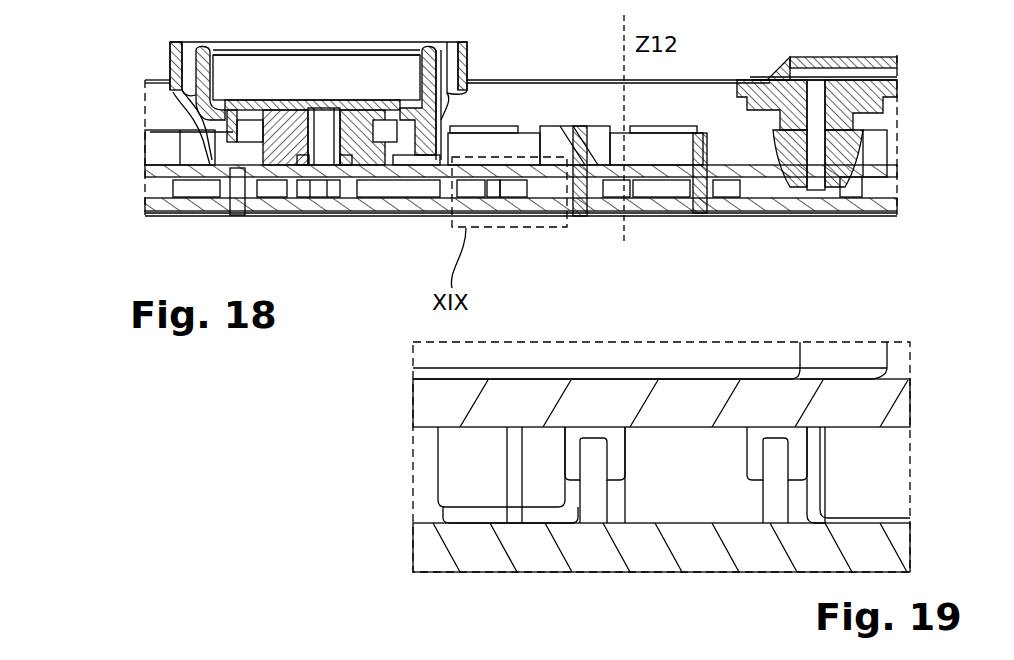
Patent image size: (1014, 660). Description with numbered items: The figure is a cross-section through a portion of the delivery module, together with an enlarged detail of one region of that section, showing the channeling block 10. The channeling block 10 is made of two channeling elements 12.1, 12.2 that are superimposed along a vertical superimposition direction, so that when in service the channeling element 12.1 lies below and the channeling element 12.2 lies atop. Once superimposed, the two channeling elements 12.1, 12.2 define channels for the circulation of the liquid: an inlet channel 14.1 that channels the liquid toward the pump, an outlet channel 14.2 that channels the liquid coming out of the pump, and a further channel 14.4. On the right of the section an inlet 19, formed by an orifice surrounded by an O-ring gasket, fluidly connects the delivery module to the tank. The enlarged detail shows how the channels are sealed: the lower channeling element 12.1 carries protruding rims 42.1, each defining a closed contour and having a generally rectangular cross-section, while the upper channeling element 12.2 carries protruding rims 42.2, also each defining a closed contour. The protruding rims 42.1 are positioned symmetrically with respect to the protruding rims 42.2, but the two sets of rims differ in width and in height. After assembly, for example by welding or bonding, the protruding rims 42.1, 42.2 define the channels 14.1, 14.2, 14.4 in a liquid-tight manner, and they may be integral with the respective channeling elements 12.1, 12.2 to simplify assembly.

In FIG. 18, the channeling block 10 is at (68, 156).
In FIG. 19, the channeling block 10 is at (247, 418).
In FIG. 18, the channeling element 12.1 is at (160, 206).
In FIG. 19, the channeling element 12.1 is at (433, 552).
In FIG. 18, the channeling element 12.2 is at (160, 172).
In FIG. 19, the channeling element 12.2 is at (433, 398).
In FIG. 18, the inlet channel 14.1 is at (838, 197).
In FIG. 18, the outlet channel 14.2 is at (510, 196).
In FIG. 18, the channel 14.4 is at (323, 196).
In FIG. 18, the inlet 19 is at (785, 160).
In FIG. 19, the protruding rims 42.1 is at (597, 500).
In FIG. 19, the protruding rims 42.2 is at (572, 455).